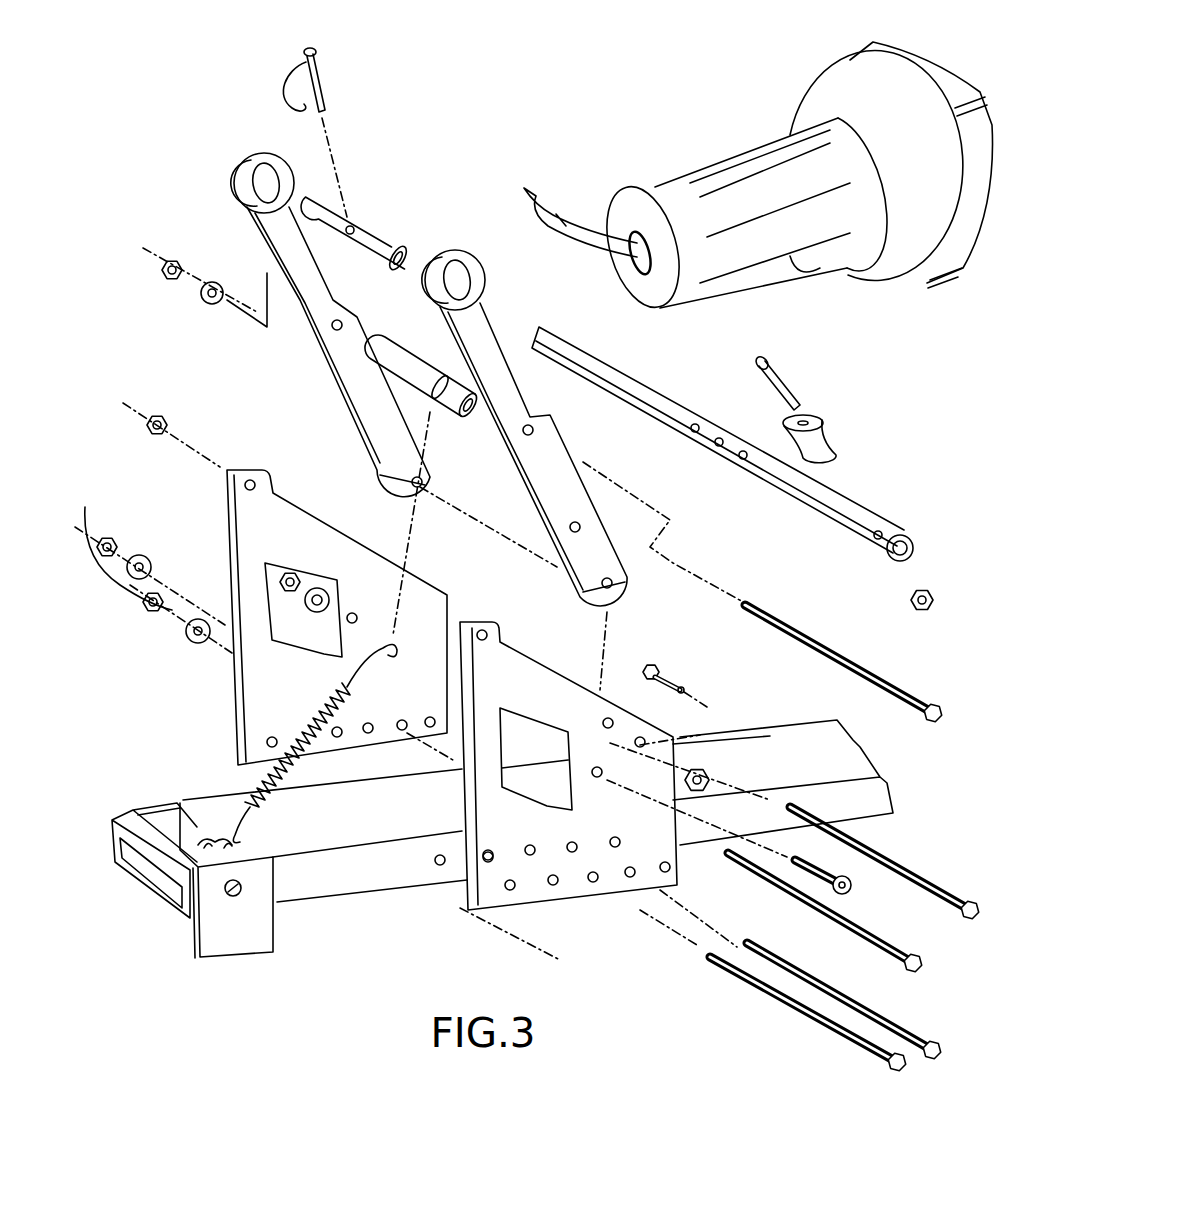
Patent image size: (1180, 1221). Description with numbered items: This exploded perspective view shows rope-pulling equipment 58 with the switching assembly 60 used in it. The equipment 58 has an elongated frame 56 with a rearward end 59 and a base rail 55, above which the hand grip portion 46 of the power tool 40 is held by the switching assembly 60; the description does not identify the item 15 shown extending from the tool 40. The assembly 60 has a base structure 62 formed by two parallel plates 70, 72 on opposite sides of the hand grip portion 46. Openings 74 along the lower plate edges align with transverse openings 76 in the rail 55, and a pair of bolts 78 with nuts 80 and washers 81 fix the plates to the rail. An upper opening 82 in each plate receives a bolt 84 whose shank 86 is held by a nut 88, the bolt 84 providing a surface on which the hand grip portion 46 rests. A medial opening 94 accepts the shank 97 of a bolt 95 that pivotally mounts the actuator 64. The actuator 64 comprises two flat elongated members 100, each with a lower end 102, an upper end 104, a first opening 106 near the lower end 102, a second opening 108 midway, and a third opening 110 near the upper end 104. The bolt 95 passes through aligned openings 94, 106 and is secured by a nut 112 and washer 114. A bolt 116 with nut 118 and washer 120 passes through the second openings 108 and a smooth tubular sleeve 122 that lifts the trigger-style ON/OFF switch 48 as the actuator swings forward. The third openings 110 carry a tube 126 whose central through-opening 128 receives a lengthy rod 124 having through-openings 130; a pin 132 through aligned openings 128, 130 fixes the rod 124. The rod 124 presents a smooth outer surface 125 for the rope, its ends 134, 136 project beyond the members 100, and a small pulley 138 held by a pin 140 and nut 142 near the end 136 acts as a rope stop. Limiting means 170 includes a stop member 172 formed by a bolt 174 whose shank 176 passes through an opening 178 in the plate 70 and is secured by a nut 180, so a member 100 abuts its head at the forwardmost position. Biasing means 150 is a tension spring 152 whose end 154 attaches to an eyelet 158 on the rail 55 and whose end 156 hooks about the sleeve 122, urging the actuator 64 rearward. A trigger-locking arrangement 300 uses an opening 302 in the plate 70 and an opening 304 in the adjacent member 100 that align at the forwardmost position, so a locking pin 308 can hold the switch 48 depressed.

The cable 15 is at (548, 200).
The power tool 40 is at (960, 278).
The hand grip portion 46 is at (660, 182).
The trigger-style ON/OFF switch 48 is at (806, 270).
The base rail 55 is at (323, 881).
The elongated base or frame 56 is at (322, 893).
The rope-pulling equipment 58 is at (750, 402).
The rearward end 59 is at (193, 930).
The switching assembly 60 is at (691, 341).
The base or frame structure 62 is at (410, 666).
The actuator 64 is at (397, 347).
The plate 70 is at (232, 668).
The plate 72 is at (470, 900).
The openings 74 is at (402, 731).
The transversely-extending openings 76 is at (485, 865).
The bolts 78 is at (810, 1000).
The nuts 80 is at (106, 537).
The washers 81 is at (202, 618).
The opening 82 is at (251, 480).
The bolt 84 is at (884, 863).
The shank 86 is at (905, 878).
The nut 88 is at (162, 417).
The opening 94 is at (352, 612).
The bolt 95 is at (834, 912).
The shank 97 is at (800, 903).
The elongated members 100 is at (425, 399).
The lower end 102 is at (424, 484).
The upper end 104 is at (236, 184).
The first opening 106 is at (385, 478).
The second opening 108 is at (332, 327).
The third opening 110 is at (262, 192).
The nut 112 is at (288, 594).
The washer 114 is at (316, 613).
The bolt 116 is at (808, 650).
The nut 118 is at (165, 277).
The washer 120 is at (206, 304).
The tubular metal sleeve 122 is at (422, 478).
The rod 124 is at (755, 487).
The smooth outer tubular surface 125 is at (802, 508).
The metal tube 126 is at (393, 235).
The through-opening 128 is at (354, 226).
The through-openings 130 is at (743, 451).
The pin 132 is at (324, 96).
The rod end 134 is at (738, 443).
The rod end 136 is at (902, 535).
The small pulley 138 is at (826, 432).
The pin 140 is at (788, 393).
The nut 142 is at (910, 599).
The biasing means 150 is at (302, 873).
The tension spring 152 is at (295, 738).
The spring end 154 is at (243, 830).
The spring end 156 is at (400, 640).
The eyelet 158 is at (215, 840).
The limiting means 170 is at (813, 775).
The stop member 172 is at (669, 691).
The bolt 174 is at (648, 676).
The shank 176 is at (686, 689).
The opening 178 is at (705, 776).
The nut 180 is at (858, 283).
The trigger-locking arrangement 300 is at (793, 775).
The opening 302 is at (605, 718).
The opening 304 is at (580, 523).
The locking pin 308 is at (850, 878).